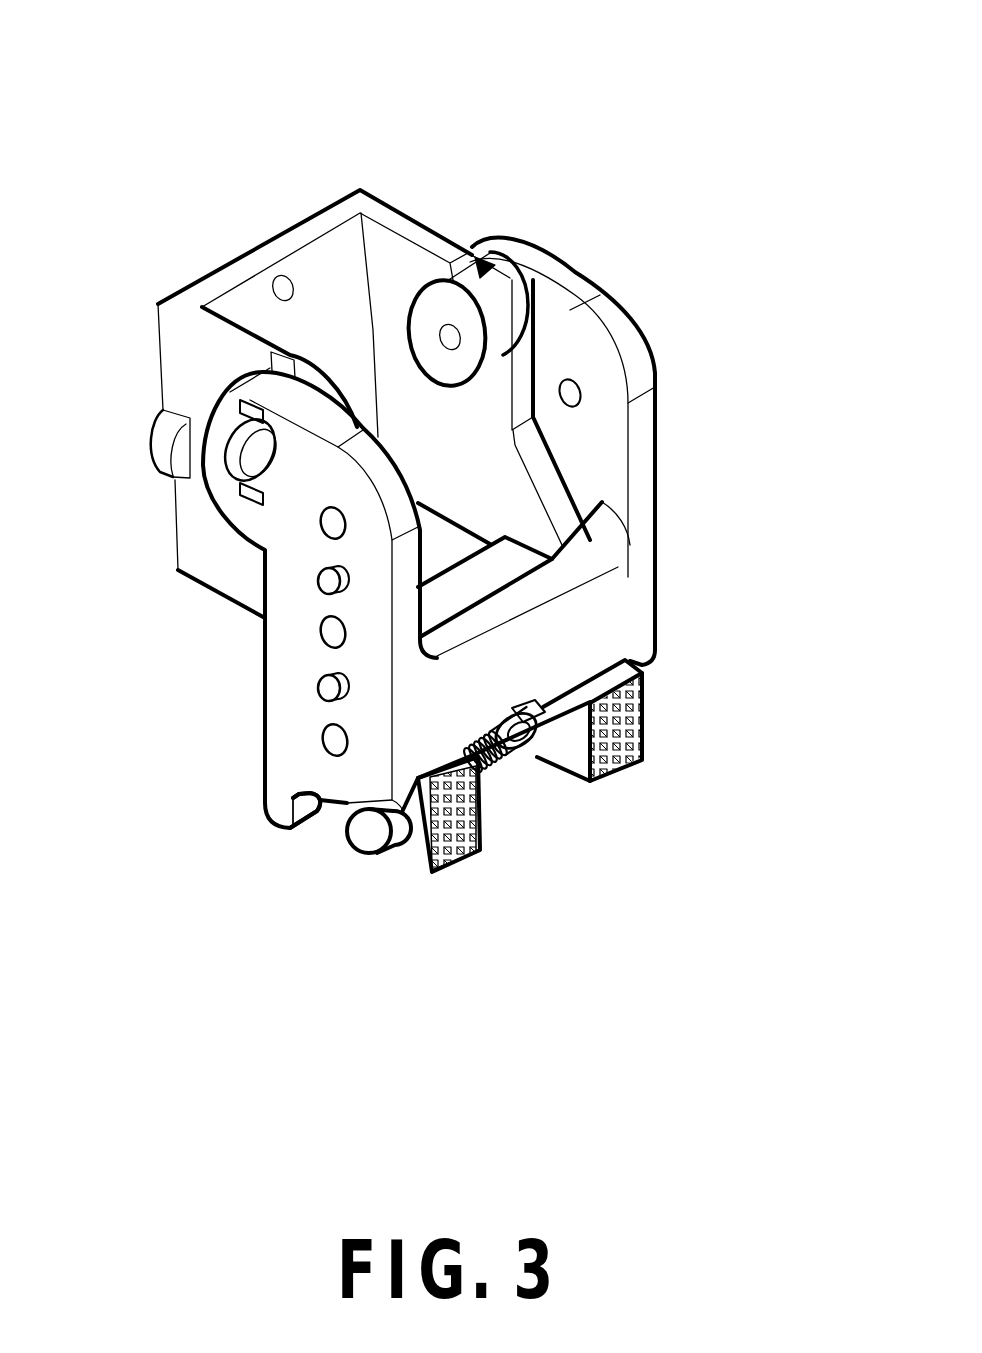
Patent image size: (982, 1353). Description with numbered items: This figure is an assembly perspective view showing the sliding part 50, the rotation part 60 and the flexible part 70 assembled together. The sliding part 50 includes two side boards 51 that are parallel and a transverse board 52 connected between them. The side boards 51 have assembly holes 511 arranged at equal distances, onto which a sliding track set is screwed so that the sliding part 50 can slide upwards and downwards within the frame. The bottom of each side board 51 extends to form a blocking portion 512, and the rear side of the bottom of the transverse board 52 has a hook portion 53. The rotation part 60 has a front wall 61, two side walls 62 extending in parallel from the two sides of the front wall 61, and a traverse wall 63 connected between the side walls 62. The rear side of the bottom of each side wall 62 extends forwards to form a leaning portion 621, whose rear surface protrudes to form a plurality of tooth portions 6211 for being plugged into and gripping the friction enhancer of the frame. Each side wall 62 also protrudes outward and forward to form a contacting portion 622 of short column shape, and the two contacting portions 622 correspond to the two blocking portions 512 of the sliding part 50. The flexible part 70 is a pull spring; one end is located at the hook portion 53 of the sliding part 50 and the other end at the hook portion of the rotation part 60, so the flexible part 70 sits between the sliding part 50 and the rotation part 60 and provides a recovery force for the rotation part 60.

The sliding part 50 is at (640, 324).
The side boards 51 is at (268, 672).
The assembly holes 511 is at (330, 735).
The blocking portion 512 is at (295, 835).
The transverse board 52 is at (593, 622).
The hook portion 53 is at (506, 861).
The rotation part 60 is at (315, 189).
The front wall 61 is at (203, 272).
The side walls 62 is at (422, 222).
The leaning portion 621 is at (524, 868).
The knurled gripping surface 6211 is at (500, 838).
The contacting portion 622 is at (369, 835).
The traverse wall 63 is at (505, 570).
The flexible part 70 is at (523, 779).